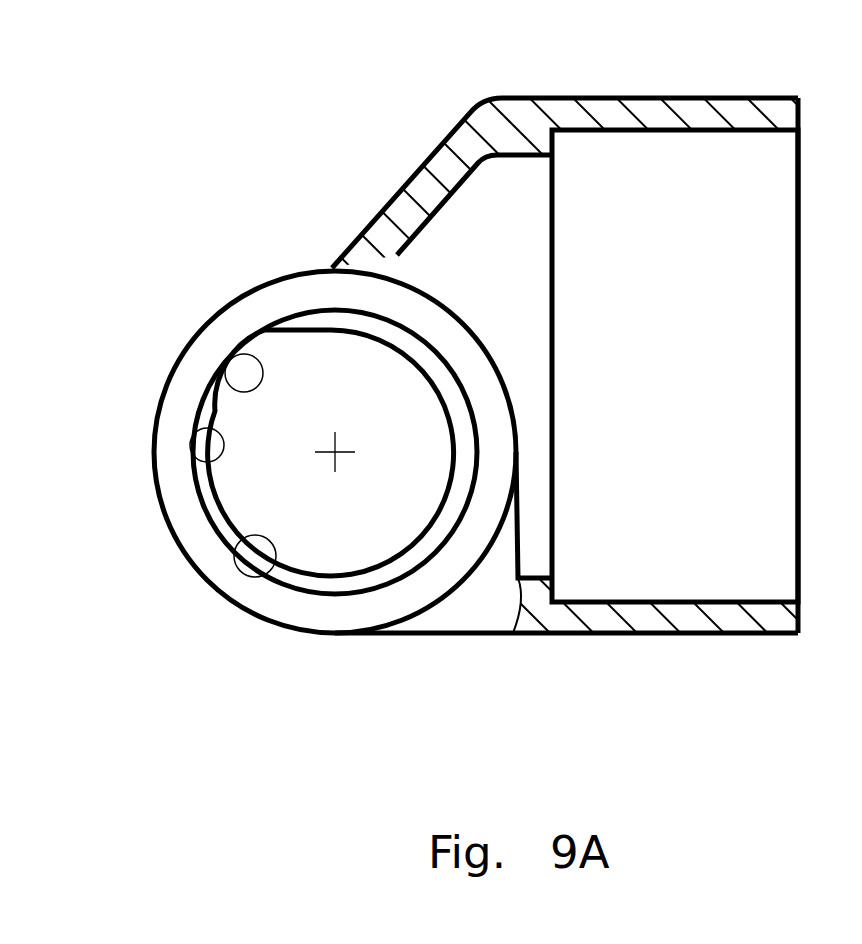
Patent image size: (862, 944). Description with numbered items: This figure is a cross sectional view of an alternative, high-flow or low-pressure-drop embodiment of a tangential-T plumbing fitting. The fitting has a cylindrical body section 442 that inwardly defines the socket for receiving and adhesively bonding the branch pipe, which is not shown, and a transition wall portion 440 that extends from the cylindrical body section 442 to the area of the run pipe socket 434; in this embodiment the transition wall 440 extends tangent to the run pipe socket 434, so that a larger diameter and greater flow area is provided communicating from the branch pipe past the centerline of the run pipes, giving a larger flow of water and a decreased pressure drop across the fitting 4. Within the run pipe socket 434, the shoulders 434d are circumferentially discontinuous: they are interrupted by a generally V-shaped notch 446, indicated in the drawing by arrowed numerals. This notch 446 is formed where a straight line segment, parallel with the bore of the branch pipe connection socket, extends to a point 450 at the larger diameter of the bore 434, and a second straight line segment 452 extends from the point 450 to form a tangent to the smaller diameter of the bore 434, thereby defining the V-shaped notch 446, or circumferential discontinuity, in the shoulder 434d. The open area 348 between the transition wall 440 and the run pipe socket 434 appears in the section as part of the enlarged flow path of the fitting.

The housing 4 is at (740, 602).
The cylindrical body section 442 is at (692, 118).
The transition wall portion 440 is at (390, 272).
The cavity 348 is at (303, 333).
The straight line segment 452 is at (203, 384).
The shoulders 434d is at (450, 420).
The point 450 is at (265, 326).
The V-shaped notch 446 is at (273, 345).
The run pipe socket 434 is at (195, 452).